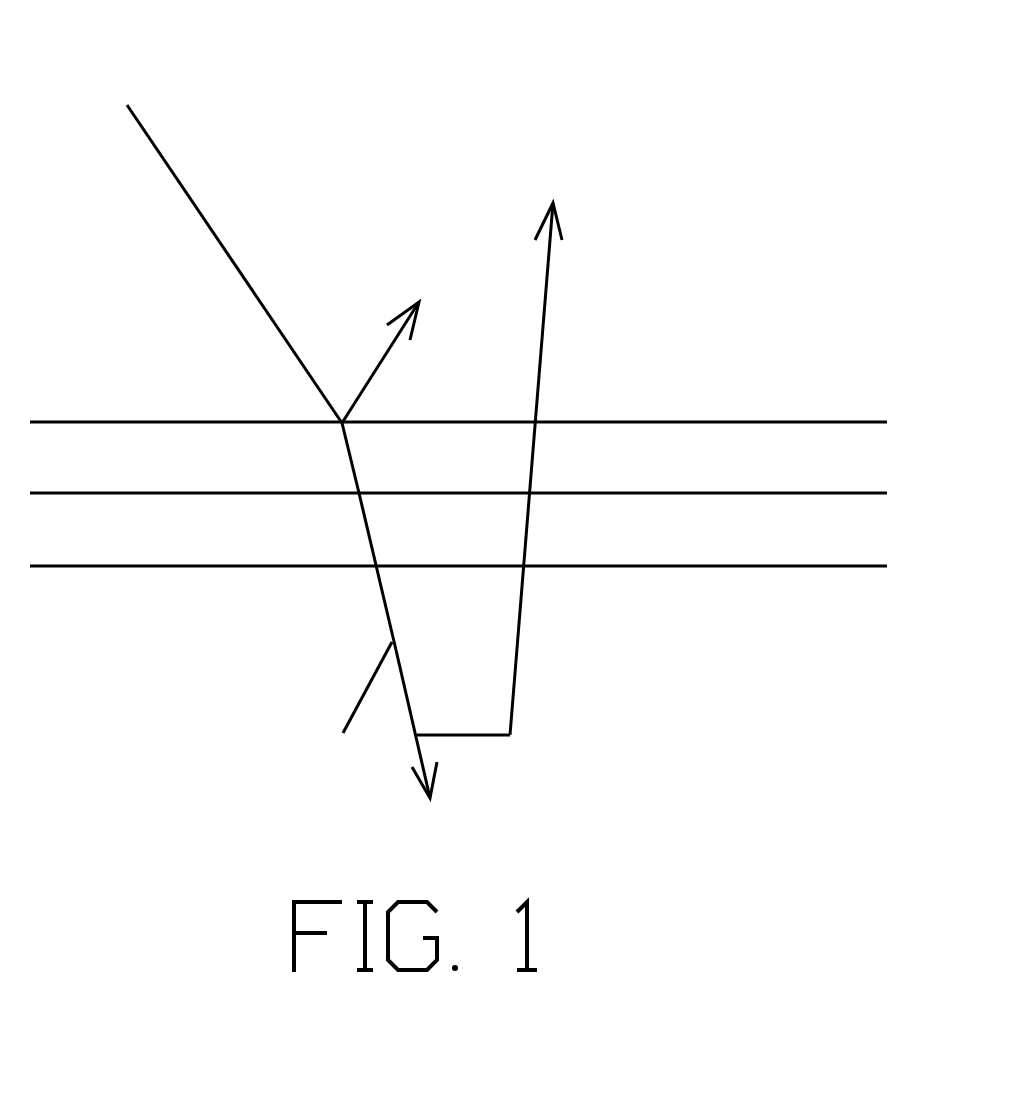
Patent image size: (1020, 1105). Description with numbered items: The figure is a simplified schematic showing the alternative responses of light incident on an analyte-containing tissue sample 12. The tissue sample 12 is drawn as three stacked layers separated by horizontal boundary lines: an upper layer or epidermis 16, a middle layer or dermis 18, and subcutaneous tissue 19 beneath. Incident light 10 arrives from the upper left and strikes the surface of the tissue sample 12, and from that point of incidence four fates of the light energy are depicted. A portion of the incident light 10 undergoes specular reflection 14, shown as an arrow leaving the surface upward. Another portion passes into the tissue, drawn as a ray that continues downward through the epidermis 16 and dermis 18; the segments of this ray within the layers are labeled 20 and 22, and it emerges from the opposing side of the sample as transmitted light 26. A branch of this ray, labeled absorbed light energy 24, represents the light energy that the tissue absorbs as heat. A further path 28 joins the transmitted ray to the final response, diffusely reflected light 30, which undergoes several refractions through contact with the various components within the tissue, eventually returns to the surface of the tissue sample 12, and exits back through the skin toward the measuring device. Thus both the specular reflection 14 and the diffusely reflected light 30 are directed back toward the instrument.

The incident light 10 is at (194, 224).
The tissue sample 12 is at (458, 392).
The specular reflection 14 is at (392, 324).
The epidermis 16 is at (458, 433).
The dermis 18 is at (458, 560).
The subcutaneous tissue 19 is at (348, 622).
The light transmitted through epidermis 20 is at (376, 458).
The light transmitted through dermis and subcutaneous tissue 22 is at (405, 571).
The absorbed light energy 24 is at (288, 705).
The transmitted light 26 is at (431, 747).
The scattered light path 28 is at (463, 708).
The diffusely reflected light 30 is at (586, 429).